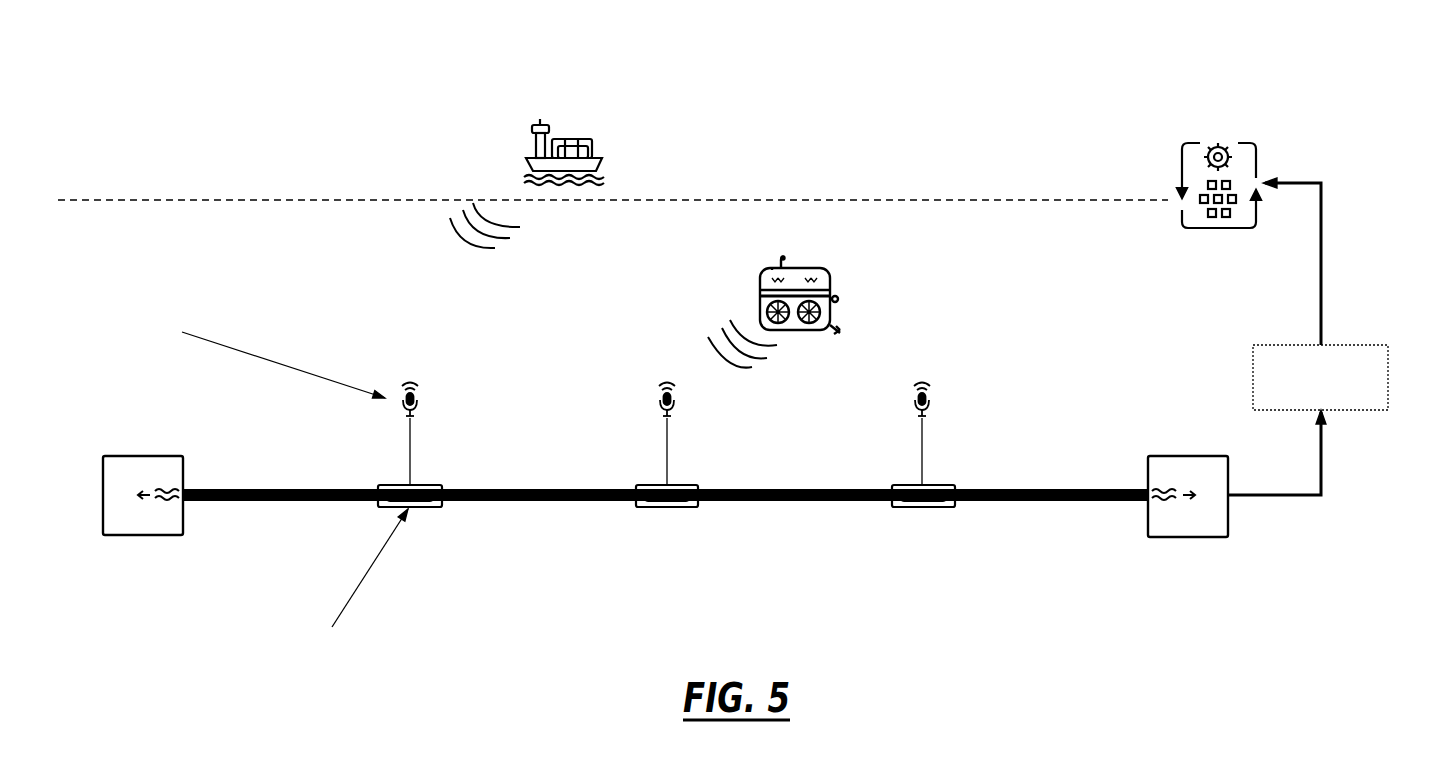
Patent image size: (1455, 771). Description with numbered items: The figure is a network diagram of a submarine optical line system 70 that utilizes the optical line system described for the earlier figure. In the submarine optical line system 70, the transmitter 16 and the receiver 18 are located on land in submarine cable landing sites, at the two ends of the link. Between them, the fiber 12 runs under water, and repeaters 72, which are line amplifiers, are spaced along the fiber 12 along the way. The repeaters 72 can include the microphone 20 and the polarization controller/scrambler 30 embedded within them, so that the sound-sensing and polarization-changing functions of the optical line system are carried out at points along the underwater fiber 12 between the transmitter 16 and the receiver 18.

The submarine optical line system 70 is at (812, 70).
The repeaters 72 is at (945, 343).
The fiber 12 is at (1012, 462).
The transmitter 16 is at (172, 438).
The receiver 18 is at (1190, 432).
The microphone 20 is at (945, 400).
The polarization controller/scrambler 30 is at (938, 470).